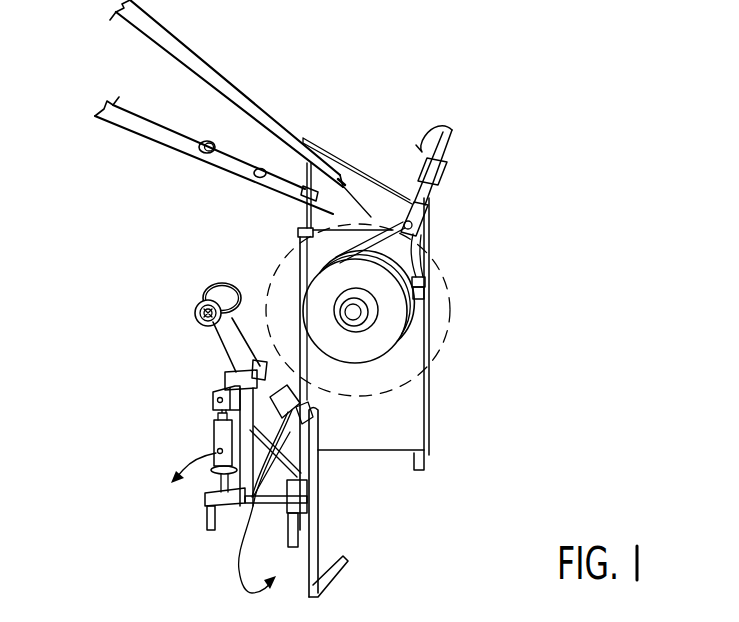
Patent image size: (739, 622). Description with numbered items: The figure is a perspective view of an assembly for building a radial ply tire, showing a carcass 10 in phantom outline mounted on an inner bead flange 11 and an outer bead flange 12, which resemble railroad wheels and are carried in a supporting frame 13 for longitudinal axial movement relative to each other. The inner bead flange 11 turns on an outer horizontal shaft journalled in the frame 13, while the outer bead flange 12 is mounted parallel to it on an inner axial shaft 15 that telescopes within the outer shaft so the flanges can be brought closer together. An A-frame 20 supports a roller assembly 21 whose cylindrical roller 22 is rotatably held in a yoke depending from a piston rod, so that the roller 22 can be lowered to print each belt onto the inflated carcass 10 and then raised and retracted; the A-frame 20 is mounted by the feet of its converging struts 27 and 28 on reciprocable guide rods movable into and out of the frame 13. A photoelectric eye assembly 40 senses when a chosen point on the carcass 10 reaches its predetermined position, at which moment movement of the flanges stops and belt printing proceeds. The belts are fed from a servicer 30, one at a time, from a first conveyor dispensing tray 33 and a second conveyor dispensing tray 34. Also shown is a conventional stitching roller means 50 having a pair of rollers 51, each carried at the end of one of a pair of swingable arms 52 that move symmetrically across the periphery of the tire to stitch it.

The carcass 10 is at (452, 325).
The inner bead flange 11 is at (343, 255).
The outer bead flange 12 is at (318, 298).
The supporting frame 13 is at (417, 416).
The inner axial shaft 15 is at (355, 318).
The A-frame 20 is at (437, 258).
The roller assembly 21 is at (440, 198).
The cylindrical roller 22 is at (431, 280).
The converging strut 27 is at (428, 231).
The converging strut 28 is at (385, 225).
The servicer 30 is at (84, 67).
The first conveyor dispensing tray 33 is at (217, 76).
The second conveyor dispensing tray 34 is at (173, 143).
The photoelectric eye assembly 40 is at (318, 403).
The stitching roller means 50 is at (188, 428).
The roller 51 is at (200, 292).
The swingable arm 52 is at (222, 350).